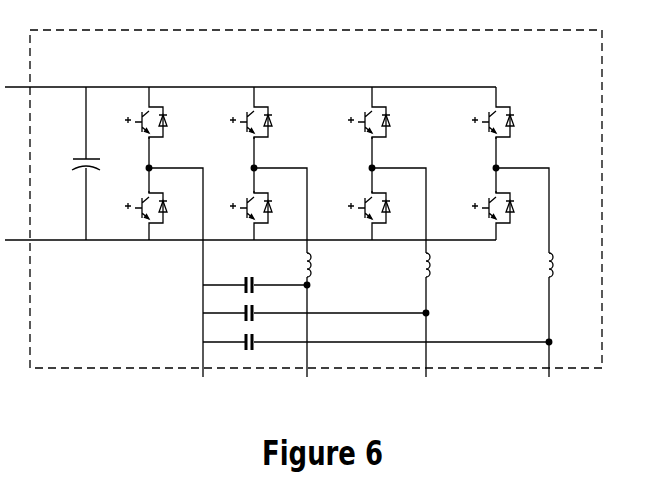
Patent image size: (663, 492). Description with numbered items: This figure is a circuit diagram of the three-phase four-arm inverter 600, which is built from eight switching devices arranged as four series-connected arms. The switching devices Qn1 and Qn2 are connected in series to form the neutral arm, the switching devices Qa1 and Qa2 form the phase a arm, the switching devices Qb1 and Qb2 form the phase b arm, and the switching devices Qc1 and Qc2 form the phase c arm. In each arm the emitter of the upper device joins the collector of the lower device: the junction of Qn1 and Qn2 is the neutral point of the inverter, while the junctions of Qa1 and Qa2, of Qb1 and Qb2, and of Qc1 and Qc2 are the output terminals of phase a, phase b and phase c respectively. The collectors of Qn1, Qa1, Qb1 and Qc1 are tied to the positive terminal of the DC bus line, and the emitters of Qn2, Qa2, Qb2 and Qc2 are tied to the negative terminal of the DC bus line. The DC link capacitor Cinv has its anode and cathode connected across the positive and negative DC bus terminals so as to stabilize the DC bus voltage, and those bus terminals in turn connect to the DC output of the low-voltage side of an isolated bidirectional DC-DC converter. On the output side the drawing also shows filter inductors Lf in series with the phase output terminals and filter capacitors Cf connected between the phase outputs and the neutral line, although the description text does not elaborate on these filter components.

The three-phase four-arm inverter 600 is at (303, 203).
The DC link capacitor Cinv is at (95, 163).
The switching device Qn1 is at (136, 128).
The switching device Qn2 is at (136, 212).
The switching device Qa1 is at (241, 128).
The switching device Qa2 is at (241, 212).
The switching device Qb1 is at (359, 128).
The switching device Qb2 is at (359, 212).
The switching device Qc1 is at (483, 128).
The switching device Qc2 is at (483, 212).
The filter inductor Lf is at (443, 265).
The filter capacitor Cf is at (376, 302).